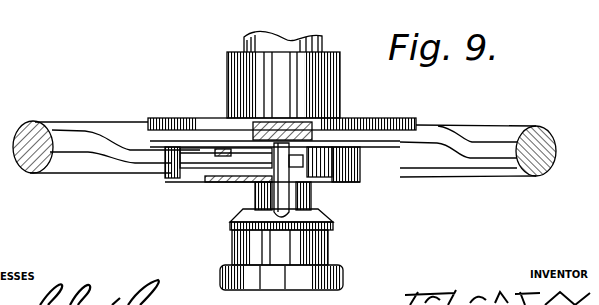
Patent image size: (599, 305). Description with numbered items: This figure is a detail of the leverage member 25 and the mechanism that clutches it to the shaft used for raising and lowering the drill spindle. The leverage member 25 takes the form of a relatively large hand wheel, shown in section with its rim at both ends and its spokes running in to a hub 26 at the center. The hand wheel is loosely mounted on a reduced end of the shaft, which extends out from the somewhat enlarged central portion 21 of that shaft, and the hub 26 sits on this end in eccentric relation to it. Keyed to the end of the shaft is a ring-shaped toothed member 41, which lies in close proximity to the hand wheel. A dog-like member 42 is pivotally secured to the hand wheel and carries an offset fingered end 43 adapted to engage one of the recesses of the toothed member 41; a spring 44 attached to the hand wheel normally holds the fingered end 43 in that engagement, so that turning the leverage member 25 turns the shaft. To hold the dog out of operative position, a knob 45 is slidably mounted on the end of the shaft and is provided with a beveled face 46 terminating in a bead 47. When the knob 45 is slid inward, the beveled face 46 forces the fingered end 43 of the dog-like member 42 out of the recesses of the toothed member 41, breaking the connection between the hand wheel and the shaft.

The enlarged central portion 21 is at (247, 38).
The leverage member 25 is at (188, 118).
The hub 26 is at (342, 88).
The ring-shaped toothed member 41 is at (213, 178).
The dog-like member 42 is at (258, 176).
The offset fingered end 43 is at (318, 199).
The spring 44 is at (200, 170).
The knob 45 is at (333, 249).
The beveled face 46 is at (320, 215).
The bead 47 is at (240, 220).